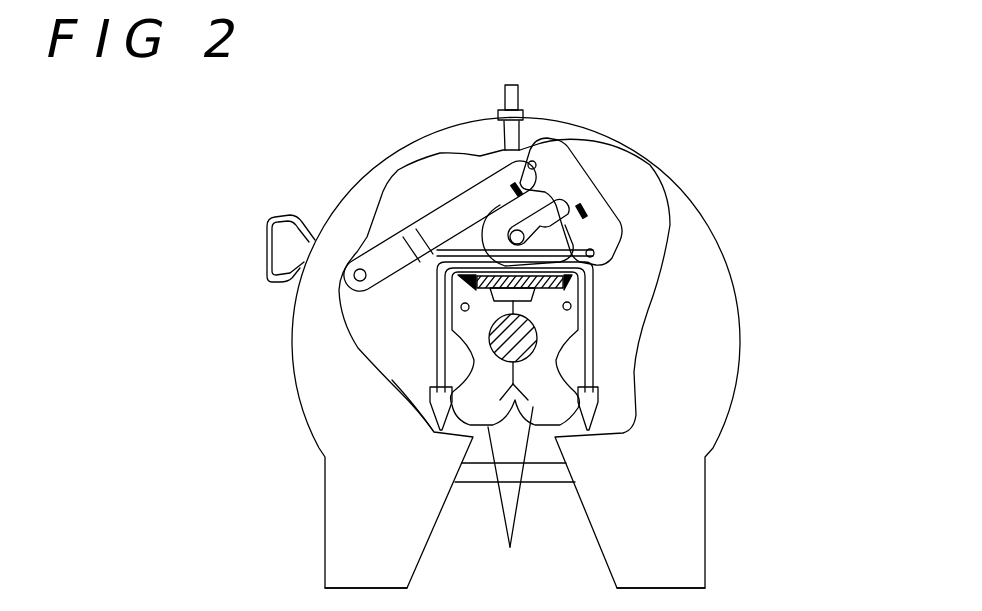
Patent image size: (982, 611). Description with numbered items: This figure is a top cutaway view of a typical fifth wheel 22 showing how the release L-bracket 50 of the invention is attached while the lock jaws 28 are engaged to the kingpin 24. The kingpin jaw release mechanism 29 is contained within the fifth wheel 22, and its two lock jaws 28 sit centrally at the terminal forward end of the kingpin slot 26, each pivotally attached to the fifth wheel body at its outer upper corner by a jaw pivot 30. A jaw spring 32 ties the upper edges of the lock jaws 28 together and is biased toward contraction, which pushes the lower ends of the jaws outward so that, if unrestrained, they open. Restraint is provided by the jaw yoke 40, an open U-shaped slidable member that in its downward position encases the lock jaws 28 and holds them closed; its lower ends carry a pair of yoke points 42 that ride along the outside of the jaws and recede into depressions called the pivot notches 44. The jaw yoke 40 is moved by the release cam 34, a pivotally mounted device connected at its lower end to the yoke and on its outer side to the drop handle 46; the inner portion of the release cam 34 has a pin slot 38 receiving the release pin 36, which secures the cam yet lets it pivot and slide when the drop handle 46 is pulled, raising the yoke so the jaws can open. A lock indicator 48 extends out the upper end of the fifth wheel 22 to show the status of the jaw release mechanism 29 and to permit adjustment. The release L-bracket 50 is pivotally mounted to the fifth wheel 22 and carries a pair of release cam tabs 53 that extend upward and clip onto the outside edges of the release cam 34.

The fifth wheel 22 is at (284, 336).
The kingpin 24 is at (537, 338).
The kingpin slot 26 is at (577, 497).
The lock jaws 28 is at (511, 500).
The jaw release mechanism 29 is at (622, 243).
The jaw pivots 30 is at (458, 306).
The jaw spring 32 is at (567, 283).
The release cam 34 is at (558, 152).
The release pin 36 is at (580, 205).
The pin slot 38 is at (513, 187).
The jaw yoke 40 is at (437, 352).
The yoke points 42 is at (432, 410).
The pivot notches 44 is at (565, 372).
The drop handle 46 is at (263, 249).
The lock indicator 48 is at (522, 90).
The release L-bracket 50 is at (443, 203).
The release cam tabs 53 is at (517, 188).